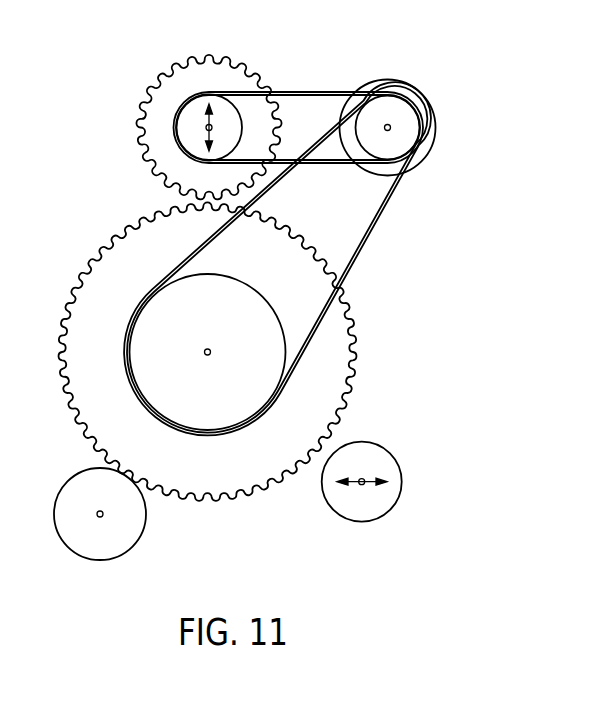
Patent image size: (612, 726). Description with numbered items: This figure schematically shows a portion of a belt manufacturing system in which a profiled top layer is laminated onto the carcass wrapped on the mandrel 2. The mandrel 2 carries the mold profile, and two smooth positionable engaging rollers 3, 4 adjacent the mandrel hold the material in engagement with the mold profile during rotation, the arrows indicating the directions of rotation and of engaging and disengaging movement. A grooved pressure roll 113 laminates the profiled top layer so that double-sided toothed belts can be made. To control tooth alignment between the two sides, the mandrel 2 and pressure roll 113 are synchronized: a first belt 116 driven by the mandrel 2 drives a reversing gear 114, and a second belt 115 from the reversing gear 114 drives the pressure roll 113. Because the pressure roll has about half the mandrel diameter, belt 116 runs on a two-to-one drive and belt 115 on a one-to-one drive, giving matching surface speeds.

The mandrel 2 is at (257, 477).
The engaging roller 3 is at (383, 507).
The engaging roller 4 is at (135, 528).
The pressure roll 113 is at (152, 95).
The reversing gear 114 is at (410, 115).
The second belt 115 is at (307, 93).
The first belt 116 is at (372, 230).